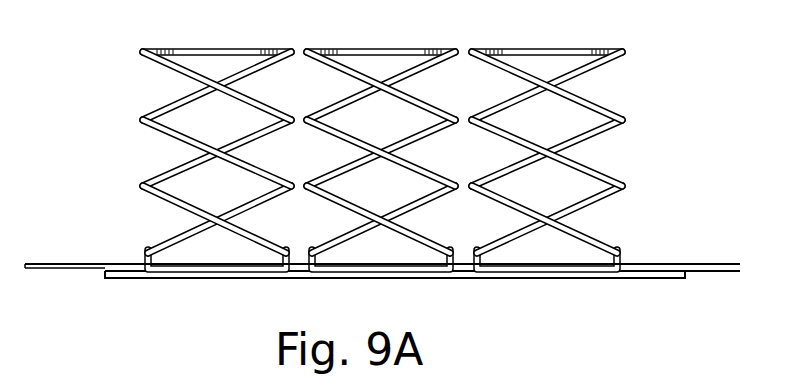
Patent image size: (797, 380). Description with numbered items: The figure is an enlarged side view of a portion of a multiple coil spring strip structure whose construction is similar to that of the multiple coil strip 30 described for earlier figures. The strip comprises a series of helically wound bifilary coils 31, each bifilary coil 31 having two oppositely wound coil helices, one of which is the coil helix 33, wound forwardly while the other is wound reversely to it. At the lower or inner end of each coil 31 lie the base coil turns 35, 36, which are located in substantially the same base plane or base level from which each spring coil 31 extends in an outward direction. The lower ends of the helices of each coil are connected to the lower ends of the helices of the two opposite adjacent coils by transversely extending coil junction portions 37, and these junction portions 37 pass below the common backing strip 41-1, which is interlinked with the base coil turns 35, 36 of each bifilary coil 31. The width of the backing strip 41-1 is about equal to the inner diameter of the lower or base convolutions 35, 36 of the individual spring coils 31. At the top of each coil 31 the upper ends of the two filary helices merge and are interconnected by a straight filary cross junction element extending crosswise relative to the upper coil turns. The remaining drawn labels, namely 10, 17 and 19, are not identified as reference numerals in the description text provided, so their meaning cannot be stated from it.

The base plate 10 is at (226, 263).
The first wire end 17 is at (192, 49).
The second wire end 19 is at (284, 49).
The multiple coil strip 30 is at (374, 160).
The bifilary coil 31 is at (243, 49).
The coil helix 33 is at (178, 107).
The base coil turn 35 is at (168, 239).
The base coil turn 36 is at (251, 237).
The coil junction portion 37 is at (220, 273).
The backing strip 41-1 is at (88, 266).